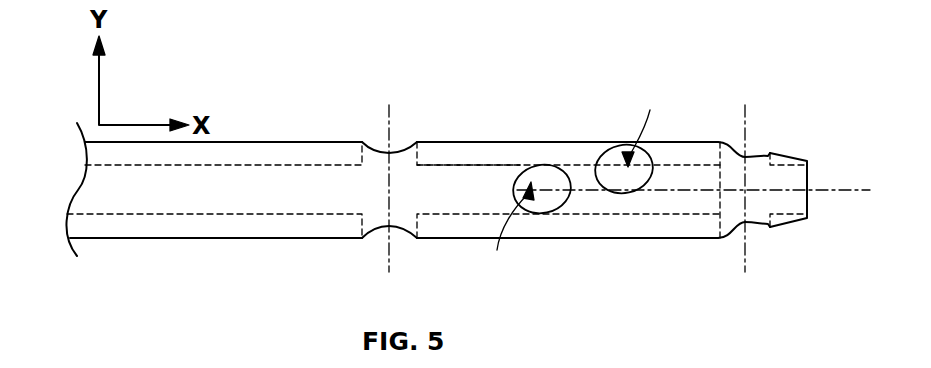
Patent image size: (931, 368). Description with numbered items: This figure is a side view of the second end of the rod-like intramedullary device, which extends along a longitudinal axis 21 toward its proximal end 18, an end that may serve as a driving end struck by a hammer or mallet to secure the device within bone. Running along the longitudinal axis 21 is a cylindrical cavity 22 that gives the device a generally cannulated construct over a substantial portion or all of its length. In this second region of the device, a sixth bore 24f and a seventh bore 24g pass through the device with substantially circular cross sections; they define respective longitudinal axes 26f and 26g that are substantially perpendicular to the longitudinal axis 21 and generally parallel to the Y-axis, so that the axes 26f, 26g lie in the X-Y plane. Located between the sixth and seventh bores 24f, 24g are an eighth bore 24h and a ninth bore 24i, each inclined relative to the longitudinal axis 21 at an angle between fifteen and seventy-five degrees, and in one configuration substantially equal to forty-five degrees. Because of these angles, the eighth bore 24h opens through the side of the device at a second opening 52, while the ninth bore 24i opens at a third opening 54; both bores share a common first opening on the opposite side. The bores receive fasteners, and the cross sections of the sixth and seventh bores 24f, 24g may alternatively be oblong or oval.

The cylindrical cavity 22 is at (88, 213).
The longitudinal axis of sixth bore 26f is at (393, 130).
The sixth bore 24f is at (418, 160).
The eighth bore 24h is at (562, 205).
The second opening 52 is at (509, 232).
The ninth bore 24i is at (597, 168).
The third opening 54 is at (645, 127).
The longitudinal axis 21 is at (837, 192).
The seventh bore 24g is at (718, 221).
The longitudinal axis of seventh bore 26g is at (747, 143).
The proximal end 18 is at (809, 178).